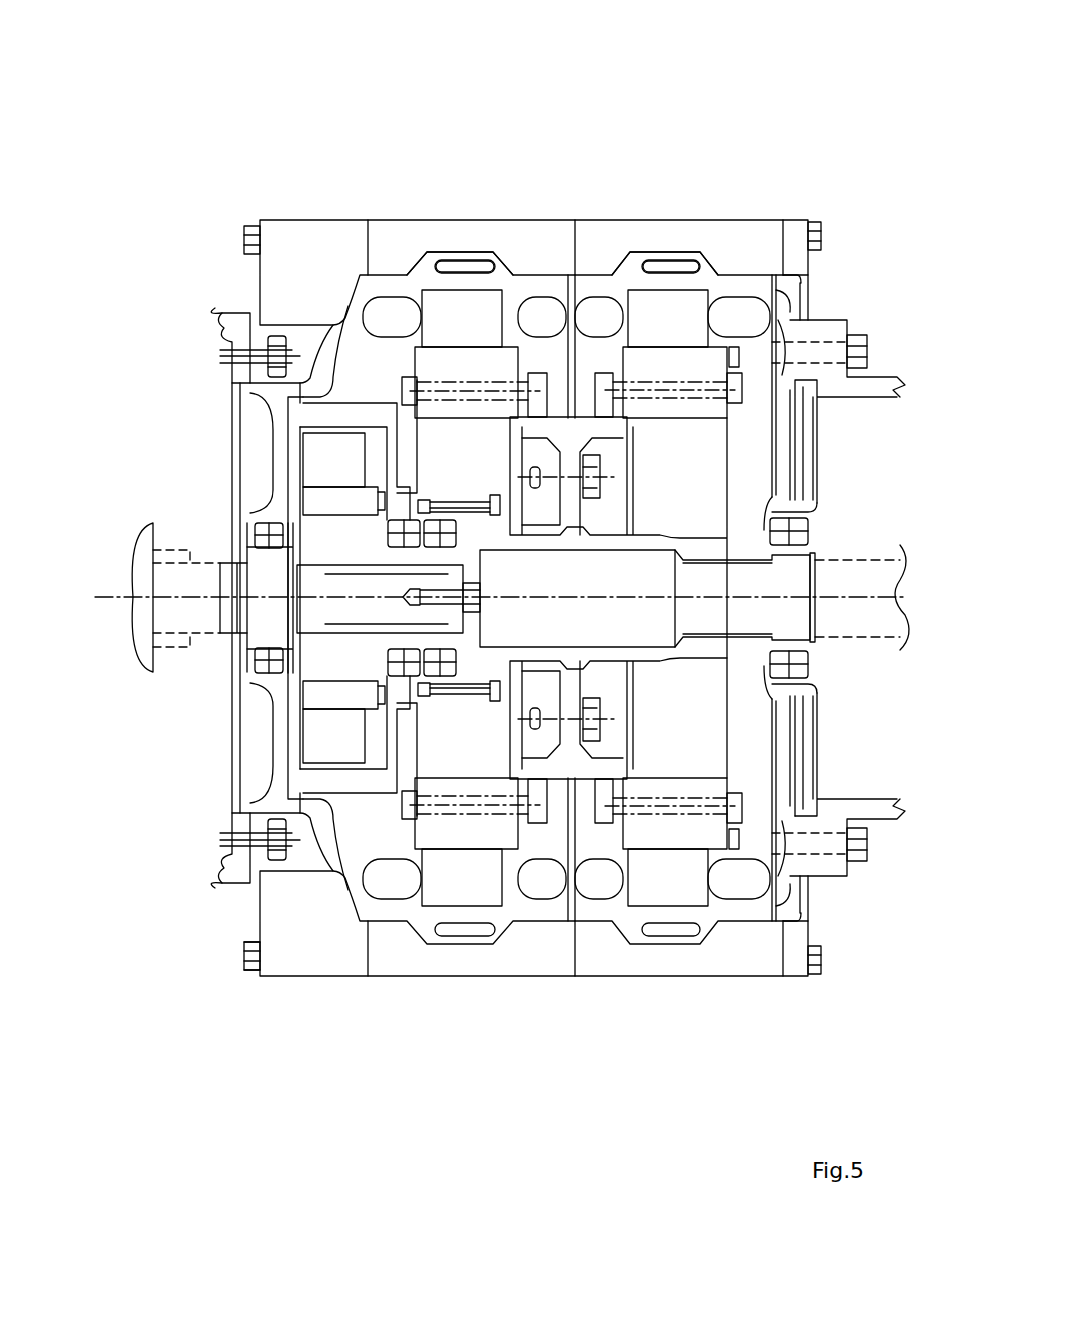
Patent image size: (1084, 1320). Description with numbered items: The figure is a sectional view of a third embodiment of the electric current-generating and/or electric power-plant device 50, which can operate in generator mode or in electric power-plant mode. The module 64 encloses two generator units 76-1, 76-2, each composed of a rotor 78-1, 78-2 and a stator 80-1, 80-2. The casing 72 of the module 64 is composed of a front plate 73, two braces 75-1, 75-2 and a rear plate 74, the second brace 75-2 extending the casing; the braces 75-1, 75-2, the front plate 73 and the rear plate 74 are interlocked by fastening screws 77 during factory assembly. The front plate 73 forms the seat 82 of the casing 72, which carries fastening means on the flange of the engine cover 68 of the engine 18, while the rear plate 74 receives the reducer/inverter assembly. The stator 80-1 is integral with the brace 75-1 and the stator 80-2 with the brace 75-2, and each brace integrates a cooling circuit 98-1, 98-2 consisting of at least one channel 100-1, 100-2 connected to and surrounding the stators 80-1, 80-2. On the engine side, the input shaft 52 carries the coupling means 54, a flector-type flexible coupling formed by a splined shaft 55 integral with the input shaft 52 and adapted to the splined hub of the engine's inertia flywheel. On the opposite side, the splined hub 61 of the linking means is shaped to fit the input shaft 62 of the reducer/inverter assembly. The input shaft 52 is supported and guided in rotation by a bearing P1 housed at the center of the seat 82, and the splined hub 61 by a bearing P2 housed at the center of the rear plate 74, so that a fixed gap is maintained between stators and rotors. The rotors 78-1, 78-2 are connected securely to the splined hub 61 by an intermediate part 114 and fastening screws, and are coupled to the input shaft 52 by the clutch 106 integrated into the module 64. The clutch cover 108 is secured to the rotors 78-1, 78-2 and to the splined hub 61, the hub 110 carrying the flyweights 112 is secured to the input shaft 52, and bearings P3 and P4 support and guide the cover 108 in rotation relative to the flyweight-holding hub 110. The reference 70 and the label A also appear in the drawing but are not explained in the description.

The engine 18 is at (220, 598).
The electric current-generating and/or electric power-plant device 50 is at (525, 1052).
The input shaft 52 is at (305, 588).
The coupling means 54 is at (174, 540).
The splined shaft 55 is at (203, 612).
The splined hub 61 is at (793, 580).
The input shaft of the reducer/inverter assembly 62 is at (870, 612).
The module 64 is at (386, 268).
The engine cover 68 is at (232, 872).
The bearing support 70 is at (818, 806).
The casing 72 is at (303, 220).
The front plate 73 is at (263, 878).
The rear plate 74 is at (792, 445).
The first brace 75-1 is at (414, 948).
The second brace 75-2 is at (724, 923).
The first generator unit 76-1 is at (514, 892).
The second generator unit 76-2 is at (720, 895).
The fastening screws 77 is at (244, 248).
The first rotor 78-1 is at (375, 783).
The second rotor 78-2 is at (663, 828).
The first stator 80-1 is at (457, 307).
The second stator 80-2 is at (647, 318).
The seat 82 is at (280, 440).
The first cooling circuit 98-1 is at (487, 262).
The second cooling circuit 98-2 is at (762, 275).
The first channel 100-1 is at (463, 264).
The second channel 100-2 is at (673, 268).
The clutch 106 is at (251, 968).
The clutch cover 108 is at (353, 827).
The flyweight-holding hub 110 is at (322, 655).
The flyweights 112 is at (248, 946).
The intermediate part 114 is at (593, 427).
The rotation axis A is at (143, 598).
The bearing P1 is at (262, 675).
The bearing P2 is at (800, 672).
The bearing P3 is at (413, 678).
The bearing P4 is at (445, 670).